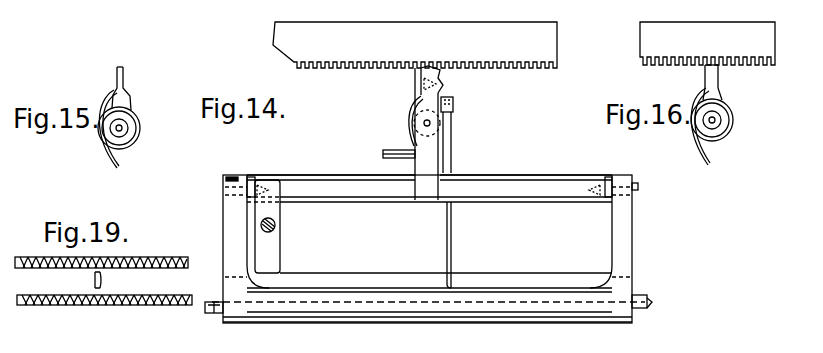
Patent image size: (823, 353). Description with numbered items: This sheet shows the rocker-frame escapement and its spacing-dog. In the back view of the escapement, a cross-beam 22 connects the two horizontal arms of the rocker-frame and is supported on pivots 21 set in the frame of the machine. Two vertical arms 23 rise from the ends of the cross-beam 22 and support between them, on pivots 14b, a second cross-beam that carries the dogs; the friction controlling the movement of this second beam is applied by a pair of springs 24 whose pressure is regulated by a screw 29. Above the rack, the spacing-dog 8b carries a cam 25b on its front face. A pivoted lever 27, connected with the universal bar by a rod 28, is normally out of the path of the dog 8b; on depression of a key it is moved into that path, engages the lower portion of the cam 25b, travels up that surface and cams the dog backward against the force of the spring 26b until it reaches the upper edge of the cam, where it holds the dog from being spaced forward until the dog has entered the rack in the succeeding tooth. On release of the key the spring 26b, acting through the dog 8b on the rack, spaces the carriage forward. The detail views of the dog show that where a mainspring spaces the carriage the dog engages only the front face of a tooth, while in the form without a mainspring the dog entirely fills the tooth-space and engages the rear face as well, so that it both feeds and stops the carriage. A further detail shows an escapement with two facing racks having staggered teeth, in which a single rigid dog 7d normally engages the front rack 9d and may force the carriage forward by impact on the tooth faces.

In FIG. 14, the vertical arms 23 is at (222, 238).
In FIG. 14, the pivots 14b is at (251, 176).
In FIG. 14, the springs 24 is at (272, 216).
In FIG. 14, the screw 29 is at (276, 234).
In FIG. 14, the rod 28 is at (452, 242).
In FIG. 14, the cross-beam 22 is at (310, 320).
In FIG. 14, the pivots 21 is at (212, 313).
In FIG. 14, the cam 25b is at (437, 92).
In FIG. 15, the cam 25b is at (131, 93).
In FIG. 16, the cam 25b is at (724, 88).
In FIG. 14, the pivoted lever 27 is at (453, 101).
In FIG. 14, the spring 26b is at (419, 106).
In FIG. 15, the spring 26b is at (112, 96).
In FIG. 16, the spring 26b is at (702, 98).
In FIG. 15, the spacing-dog 8b is at (125, 75).
In FIG. 16, the spacing-dog 8b is at (712, 78).
In FIG. 19, the front rack 9d is at (69, 270).
In FIG. 19, the dog 7d is at (101, 280).